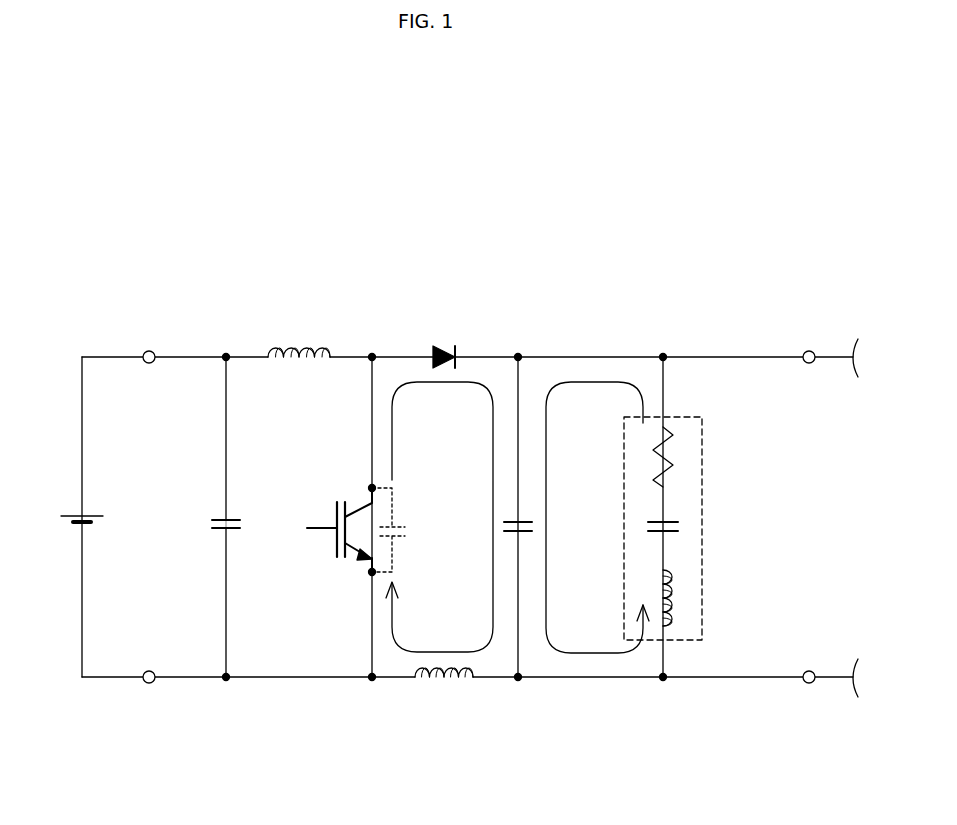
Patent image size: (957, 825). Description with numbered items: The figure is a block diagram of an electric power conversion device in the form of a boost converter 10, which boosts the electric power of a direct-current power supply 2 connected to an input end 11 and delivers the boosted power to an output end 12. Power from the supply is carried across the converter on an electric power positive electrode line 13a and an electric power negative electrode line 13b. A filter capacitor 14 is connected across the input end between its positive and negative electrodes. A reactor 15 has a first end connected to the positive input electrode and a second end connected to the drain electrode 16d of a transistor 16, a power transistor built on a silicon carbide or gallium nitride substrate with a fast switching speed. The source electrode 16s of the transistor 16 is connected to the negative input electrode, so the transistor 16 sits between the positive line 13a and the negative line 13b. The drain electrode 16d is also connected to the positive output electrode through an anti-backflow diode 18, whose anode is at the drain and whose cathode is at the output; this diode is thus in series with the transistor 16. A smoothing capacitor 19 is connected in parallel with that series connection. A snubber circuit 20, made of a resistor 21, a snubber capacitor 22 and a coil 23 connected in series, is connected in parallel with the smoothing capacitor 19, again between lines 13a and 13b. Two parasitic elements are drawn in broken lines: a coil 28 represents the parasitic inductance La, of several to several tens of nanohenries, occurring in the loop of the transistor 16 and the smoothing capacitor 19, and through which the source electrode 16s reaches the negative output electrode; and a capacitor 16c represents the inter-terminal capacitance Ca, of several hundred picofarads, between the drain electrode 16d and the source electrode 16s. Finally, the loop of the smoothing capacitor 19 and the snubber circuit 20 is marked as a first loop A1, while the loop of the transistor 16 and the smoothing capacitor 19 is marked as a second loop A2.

The boost converter 10 is at (105, 282).
The direct-current power supply 2 is at (75, 512).
The input end 11 is at (150, 350).
The output end 12 is at (809, 350).
The electric power positive electrode line 13a is at (605, 357).
The electric power negative electrode line 13b is at (633, 680).
The filter capacitor 14 is at (220, 516).
The reactor 15 is at (300, 345).
The transistor 16 is at (322, 512).
The drain electrode 16d is at (370, 487).
The source electrode 16s is at (370, 574).
The capacitor 16c is at (382, 550).
The anti-backflow diode 18 is at (448, 346).
The smoothing capacitor 19 is at (520, 522).
The snubber circuit 20 is at (702, 420).
The resistor 21 is at (668, 464).
The snubber capacitor 22 is at (675, 520).
The coil 23 is at (674, 596).
The coil 28 is at (447, 687).
The first loop A1 is at (590, 655).
The second loop A2 is at (400, 655).